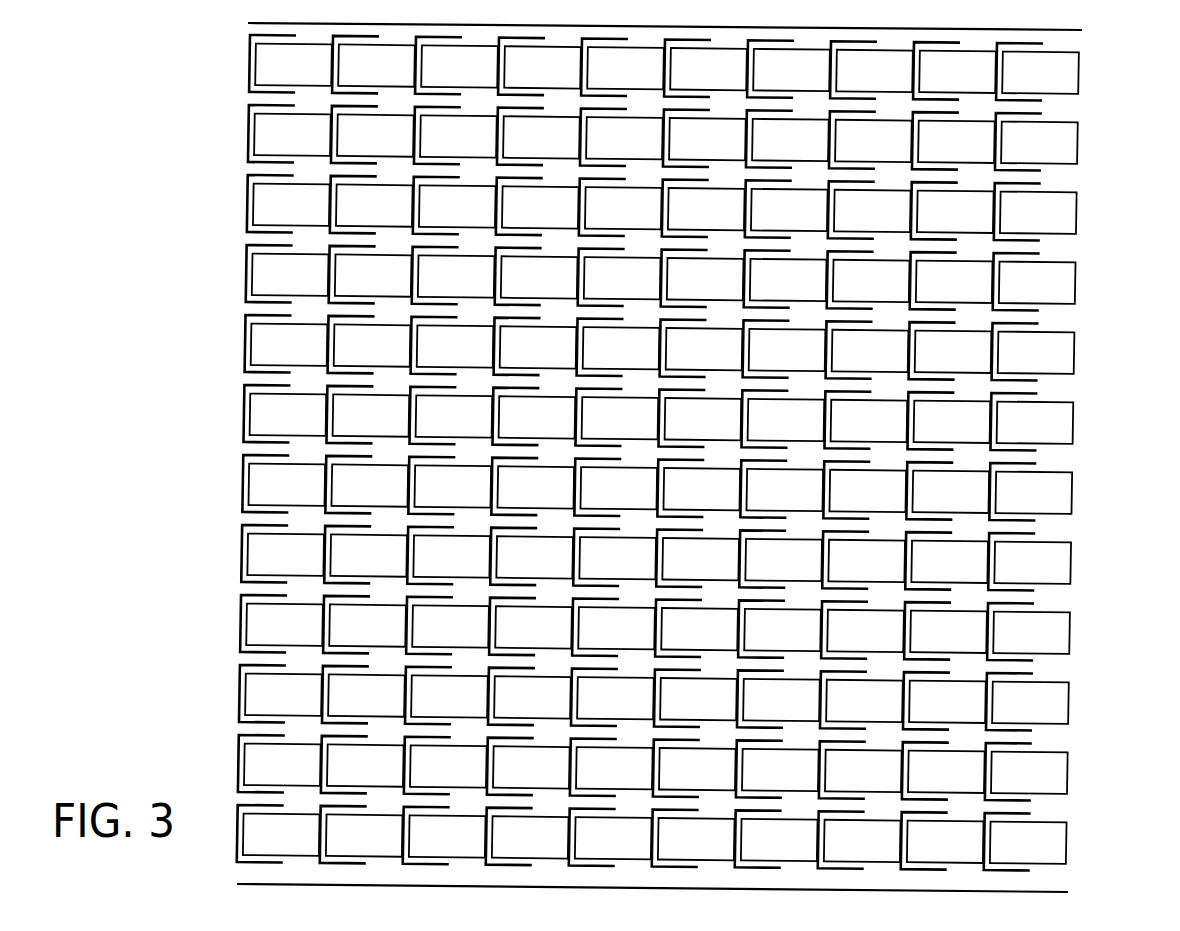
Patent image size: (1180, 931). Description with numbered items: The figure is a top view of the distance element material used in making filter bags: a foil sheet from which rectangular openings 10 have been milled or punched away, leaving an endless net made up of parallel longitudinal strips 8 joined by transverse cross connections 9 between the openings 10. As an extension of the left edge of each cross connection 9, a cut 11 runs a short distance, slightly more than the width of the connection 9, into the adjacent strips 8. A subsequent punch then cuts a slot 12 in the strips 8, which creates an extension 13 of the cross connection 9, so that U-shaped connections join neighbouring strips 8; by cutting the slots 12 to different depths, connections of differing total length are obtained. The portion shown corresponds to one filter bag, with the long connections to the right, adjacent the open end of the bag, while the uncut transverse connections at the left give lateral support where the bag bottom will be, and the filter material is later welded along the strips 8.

The longitudinal strips 8 is at (1057, 178).
The cross connections 9 is at (998, 232).
The rectangular openings 10 is at (1033, 348).
The cut 11 is at (1000, 203).
The slot 12 is at (995, 398).
The extension 13 is at (1023, 398).